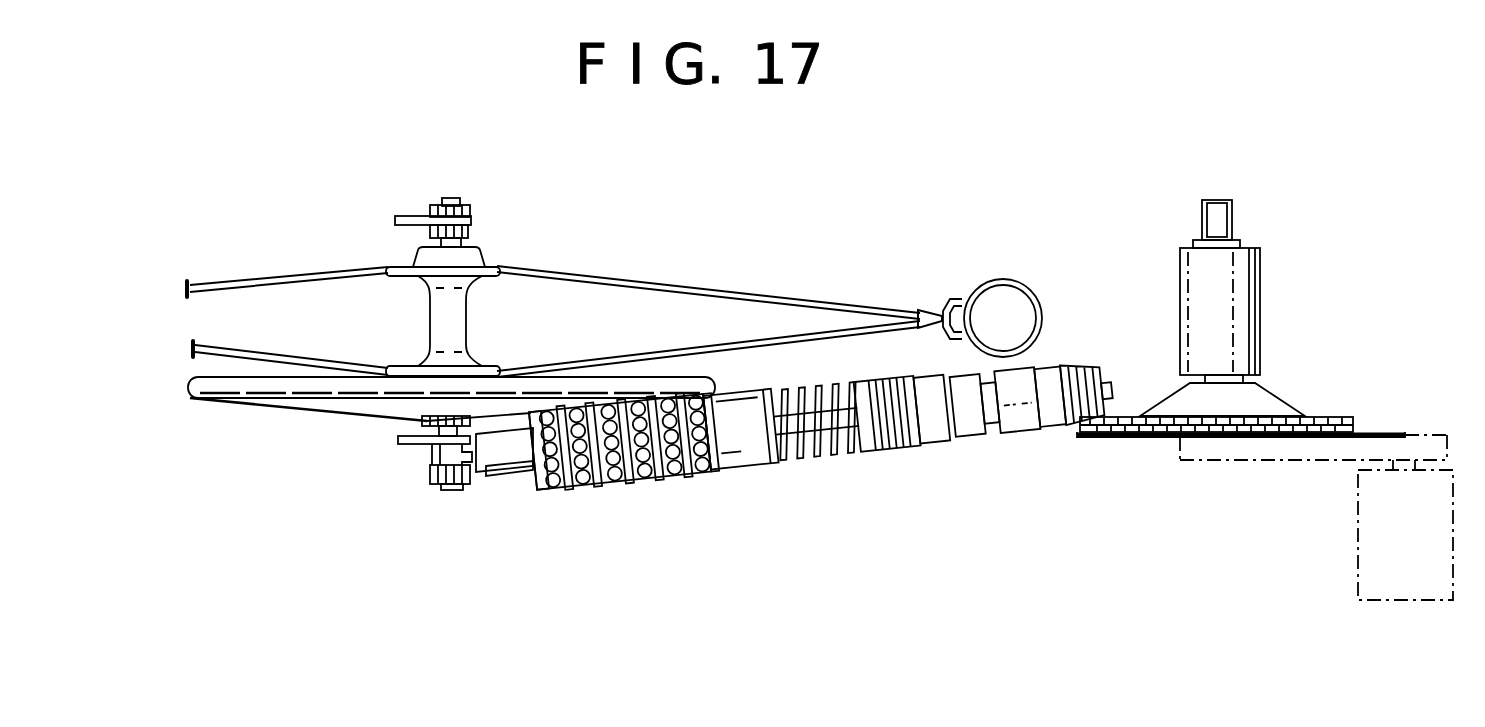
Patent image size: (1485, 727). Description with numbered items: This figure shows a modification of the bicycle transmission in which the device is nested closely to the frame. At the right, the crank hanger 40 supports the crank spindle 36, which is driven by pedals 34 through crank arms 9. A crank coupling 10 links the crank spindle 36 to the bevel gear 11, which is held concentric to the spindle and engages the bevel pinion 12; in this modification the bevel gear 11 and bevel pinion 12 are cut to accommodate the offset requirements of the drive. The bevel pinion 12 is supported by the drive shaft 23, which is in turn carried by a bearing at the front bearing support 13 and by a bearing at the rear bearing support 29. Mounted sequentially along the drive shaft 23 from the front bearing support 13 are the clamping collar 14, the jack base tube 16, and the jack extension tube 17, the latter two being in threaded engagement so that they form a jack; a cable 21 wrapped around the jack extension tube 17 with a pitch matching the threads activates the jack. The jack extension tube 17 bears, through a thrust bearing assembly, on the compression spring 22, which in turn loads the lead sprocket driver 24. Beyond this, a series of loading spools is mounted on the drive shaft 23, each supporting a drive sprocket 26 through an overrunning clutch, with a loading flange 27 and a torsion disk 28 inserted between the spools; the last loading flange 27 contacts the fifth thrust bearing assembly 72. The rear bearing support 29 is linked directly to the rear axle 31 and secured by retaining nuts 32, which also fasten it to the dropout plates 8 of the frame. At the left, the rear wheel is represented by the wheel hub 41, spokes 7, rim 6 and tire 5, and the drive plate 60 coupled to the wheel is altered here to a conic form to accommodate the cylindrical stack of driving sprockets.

The tire 5 is at (1020, 282).
The rim 6 is at (942, 308).
The spokes 7 is at (633, 357).
The dropout plates 8 is at (407, 217).
The crank arms 9 is at (1283, 452).
The crank coupling 10 is at (1262, 403).
The bevel gear 11 is at (1350, 416).
The bevel pinion 12 is at (1083, 382).
The front bearing support 13 is at (1014, 432).
The clamping collar 14 is at (992, 428).
The jack base tube 16 is at (968, 440).
The jack extension tube 17 is at (930, 392).
The cable 21 is at (906, 450).
The compression spring 22 is at (815, 442).
The drive shaft 23 is at (813, 410).
The lead sprocket driver 24 is at (733, 460).
The drive sprocket 26 is at (705, 482).
The loading flange 27 is at (576, 492).
The torsion disk 28 is at (626, 482).
The rear bearing support 29 is at (492, 480).
The rear axle 31 is at (450, 490).
The retaining nuts 32 is at (466, 232).
The pedals 34 is at (1362, 538).
The crank spindle 36 is at (1232, 212).
The crank hanger 40 is at (1236, 321).
The wheel hub 41 is at (458, 338).
The drive plate 60 is at (300, 398).
The fifth thrust bearing assembly 72 is at (531, 480).